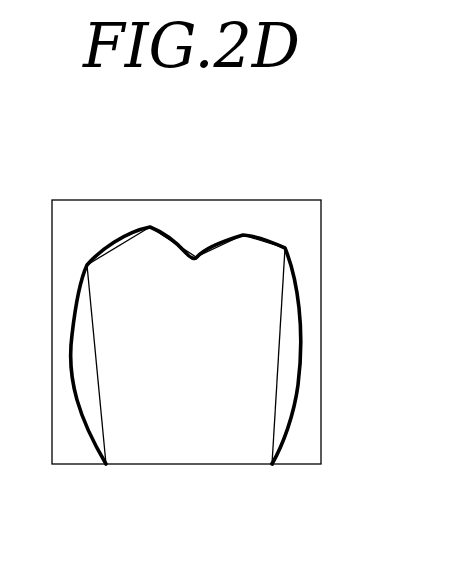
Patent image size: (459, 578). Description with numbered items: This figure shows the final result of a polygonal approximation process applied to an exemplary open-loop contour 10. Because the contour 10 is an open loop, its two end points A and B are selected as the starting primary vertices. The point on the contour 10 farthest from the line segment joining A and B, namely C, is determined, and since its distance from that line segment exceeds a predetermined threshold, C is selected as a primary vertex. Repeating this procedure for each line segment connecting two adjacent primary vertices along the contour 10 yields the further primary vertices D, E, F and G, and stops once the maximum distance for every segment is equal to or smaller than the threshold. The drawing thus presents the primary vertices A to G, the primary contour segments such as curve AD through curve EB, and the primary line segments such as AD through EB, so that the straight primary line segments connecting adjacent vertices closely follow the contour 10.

The contour 10 is at (270, 237).
The end point A is at (106, 465).
The end point B is at (272, 465).
The farthest point C is at (150, 226).
The primary vertex D is at (87, 263).
The primary vertex E is at (286, 248).
The primary vertex F is at (196, 256).
The primary vertex G is at (243, 234).